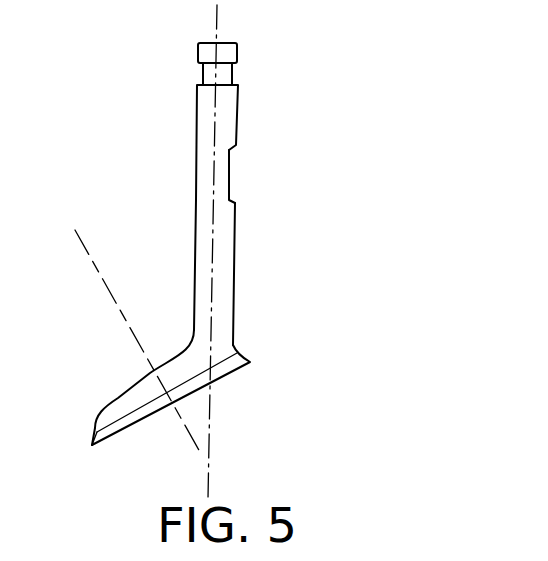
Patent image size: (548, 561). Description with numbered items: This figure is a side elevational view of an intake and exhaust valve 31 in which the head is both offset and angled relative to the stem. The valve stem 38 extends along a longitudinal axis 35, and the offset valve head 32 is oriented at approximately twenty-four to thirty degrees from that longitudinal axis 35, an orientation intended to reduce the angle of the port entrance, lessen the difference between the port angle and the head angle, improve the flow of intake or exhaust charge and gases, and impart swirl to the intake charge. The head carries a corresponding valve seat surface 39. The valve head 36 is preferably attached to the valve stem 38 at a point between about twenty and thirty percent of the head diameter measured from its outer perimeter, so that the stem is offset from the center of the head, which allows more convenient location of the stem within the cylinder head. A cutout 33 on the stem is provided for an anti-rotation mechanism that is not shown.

The intake and exhaust valve 31 is at (234, 248).
The valve head 32 is at (223, 377).
The cutout 33 is at (229, 173).
The longitudinal axis 35 is at (217, 28).
The valve head 36 is at (117, 305).
The valve stem 38 is at (197, 123).
The valve seat surface 39 is at (108, 435).